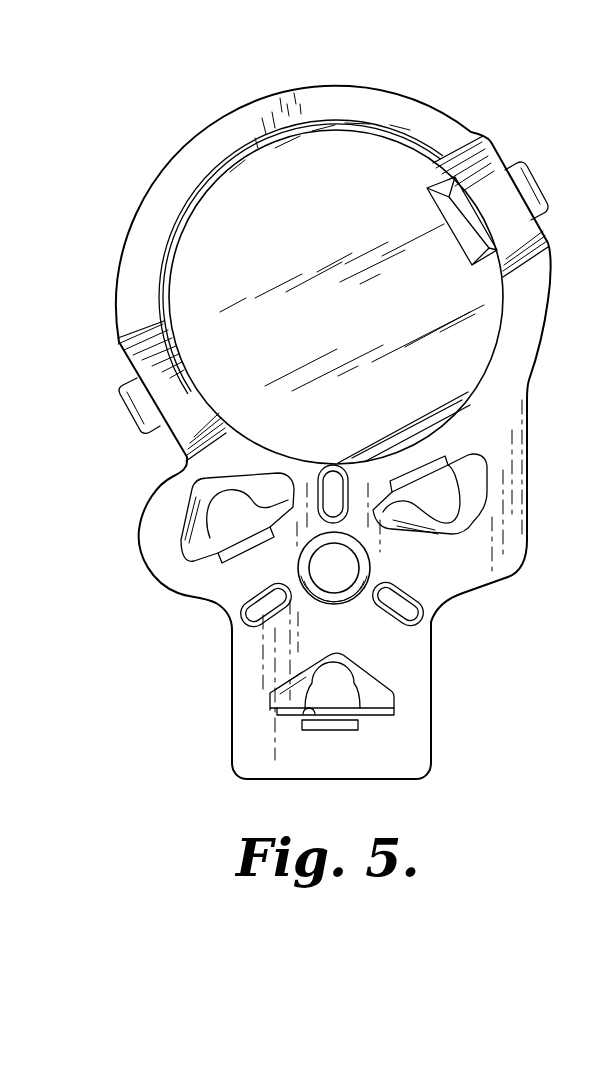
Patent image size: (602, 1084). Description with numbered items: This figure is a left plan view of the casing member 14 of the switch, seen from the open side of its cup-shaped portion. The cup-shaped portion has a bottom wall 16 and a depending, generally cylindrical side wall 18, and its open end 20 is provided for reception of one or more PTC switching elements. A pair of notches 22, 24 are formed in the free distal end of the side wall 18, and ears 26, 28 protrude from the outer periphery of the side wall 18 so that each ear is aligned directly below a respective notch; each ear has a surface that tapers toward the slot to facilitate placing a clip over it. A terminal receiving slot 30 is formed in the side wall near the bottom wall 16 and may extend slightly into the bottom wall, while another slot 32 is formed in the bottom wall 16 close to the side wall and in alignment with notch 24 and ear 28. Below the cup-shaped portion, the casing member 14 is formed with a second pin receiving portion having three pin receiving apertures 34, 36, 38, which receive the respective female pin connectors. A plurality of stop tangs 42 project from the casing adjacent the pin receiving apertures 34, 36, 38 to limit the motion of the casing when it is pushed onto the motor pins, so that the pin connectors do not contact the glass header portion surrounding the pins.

The casing member 14 is at (239, 100).
The bottom wall 16 is at (372, 165).
The side wall 18 is at (340, 105).
The open end 20 is at (184, 216).
The notch 22 is at (130, 340).
The notch 24 is at (488, 142).
The ear 26 is at (158, 422).
The ear 28 is at (537, 185).
The terminal receiving slot 30 is at (423, 434).
The slot 32 is at (458, 226).
The pin receiving aperture 34 is at (214, 558).
The pin receiving aperture 36 is at (474, 490).
The pin receiving aperture 38 is at (302, 714).
The stop tangs 42 is at (248, 630).